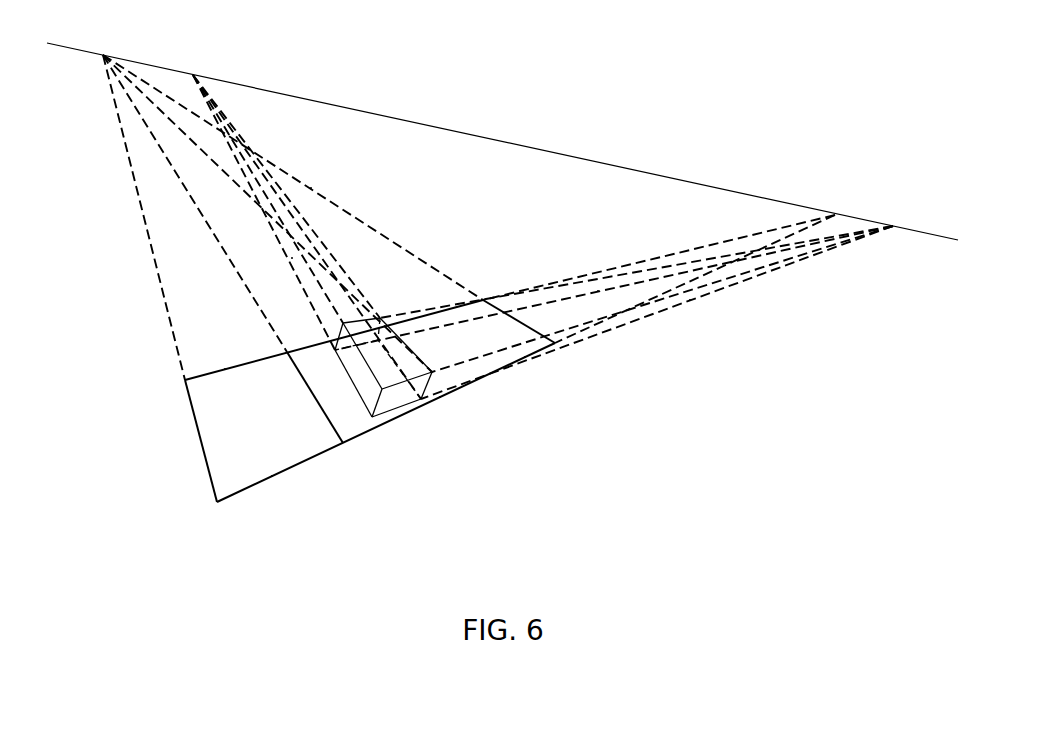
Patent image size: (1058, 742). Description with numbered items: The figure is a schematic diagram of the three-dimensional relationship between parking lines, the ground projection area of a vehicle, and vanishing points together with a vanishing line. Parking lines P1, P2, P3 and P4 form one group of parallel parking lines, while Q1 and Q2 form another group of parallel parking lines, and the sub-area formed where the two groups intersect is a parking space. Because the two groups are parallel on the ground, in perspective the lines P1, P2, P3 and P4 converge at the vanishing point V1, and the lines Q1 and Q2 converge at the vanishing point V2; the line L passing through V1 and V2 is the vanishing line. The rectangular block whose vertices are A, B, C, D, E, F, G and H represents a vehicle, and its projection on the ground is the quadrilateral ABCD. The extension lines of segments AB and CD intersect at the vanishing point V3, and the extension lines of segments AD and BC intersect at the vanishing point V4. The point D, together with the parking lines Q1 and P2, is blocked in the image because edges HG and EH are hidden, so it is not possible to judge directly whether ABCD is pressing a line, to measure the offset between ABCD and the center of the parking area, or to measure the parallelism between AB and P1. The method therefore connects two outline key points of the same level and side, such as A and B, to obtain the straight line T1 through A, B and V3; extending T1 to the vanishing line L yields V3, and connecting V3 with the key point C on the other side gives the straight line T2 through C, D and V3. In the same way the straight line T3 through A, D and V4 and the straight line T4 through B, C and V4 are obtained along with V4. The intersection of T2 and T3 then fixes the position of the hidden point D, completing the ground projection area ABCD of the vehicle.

The vanishing point V1 is at (289, 204).
The vanishing point V2 is at (666, 265).
The vanishing point V3 is at (303, 224).
The vanishing point V4 is at (625, 301).
The vanishing line L is at (502, 135).
The straight line T1 is at (275, 144).
The straight line T2 is at (325, 109).
The straight line T3 is at (613, 419).
The straight line T4 is at (707, 424).
The parking line P1 is at (369, 424).
The parking line P2 is at (318, 450).
The parking line P3 is at (454, 472).
The parking line P4 is at (541, 452).
The parking line Q1 is at (243, 458).
The parking line Q2 is at (288, 512).
The vertex of rectangular block A is at (353, 403).
The vertex of rectangular block B is at (385, 449).
The vertex of rectangular block C is at (405, 425).
The vertex of rectangular block D is at (396, 277).
The vertex of rectangular block E is at (361, 233).
The vertex of rectangular block F is at (387, 403).
The vertex of rectangular block G is at (423, 278).
The vertex of rectangular block H is at (372, 247).